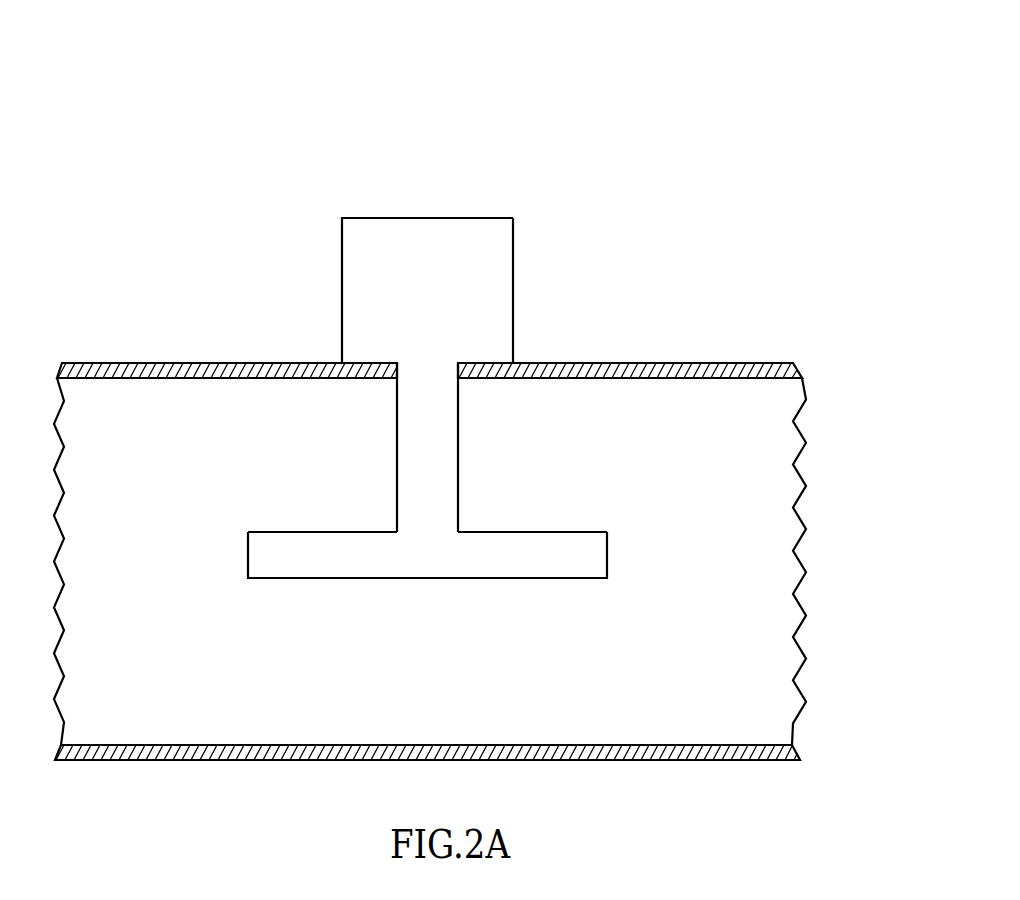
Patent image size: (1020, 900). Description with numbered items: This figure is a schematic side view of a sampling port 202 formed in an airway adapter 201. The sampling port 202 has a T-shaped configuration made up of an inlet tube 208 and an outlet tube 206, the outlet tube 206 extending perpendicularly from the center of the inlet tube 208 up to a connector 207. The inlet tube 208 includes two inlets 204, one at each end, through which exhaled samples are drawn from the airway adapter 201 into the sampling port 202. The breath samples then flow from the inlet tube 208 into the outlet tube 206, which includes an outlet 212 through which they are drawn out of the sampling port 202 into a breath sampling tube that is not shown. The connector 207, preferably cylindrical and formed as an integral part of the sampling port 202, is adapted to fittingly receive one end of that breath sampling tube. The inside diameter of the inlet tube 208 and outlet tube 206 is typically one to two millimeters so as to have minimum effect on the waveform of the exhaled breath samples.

The airway adapter 201 is at (727, 345).
The sampling port 202 is at (590, 73).
The inlets 204 is at (235, 550).
The outlet tube 206 is at (458, 438).
The connector 207 is at (527, 282).
The inlet tube 208 is at (533, 531).
The outlet 212 is at (433, 203).